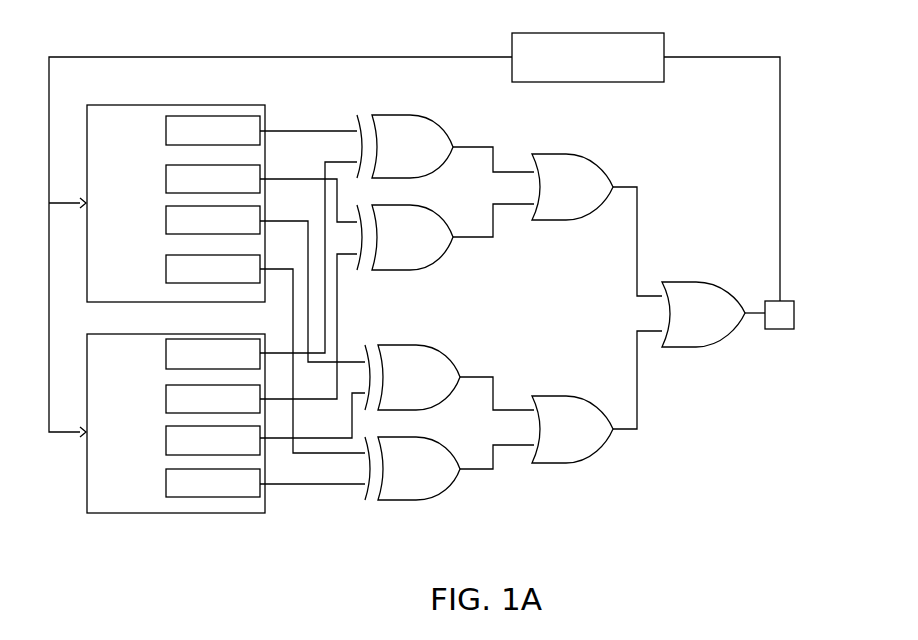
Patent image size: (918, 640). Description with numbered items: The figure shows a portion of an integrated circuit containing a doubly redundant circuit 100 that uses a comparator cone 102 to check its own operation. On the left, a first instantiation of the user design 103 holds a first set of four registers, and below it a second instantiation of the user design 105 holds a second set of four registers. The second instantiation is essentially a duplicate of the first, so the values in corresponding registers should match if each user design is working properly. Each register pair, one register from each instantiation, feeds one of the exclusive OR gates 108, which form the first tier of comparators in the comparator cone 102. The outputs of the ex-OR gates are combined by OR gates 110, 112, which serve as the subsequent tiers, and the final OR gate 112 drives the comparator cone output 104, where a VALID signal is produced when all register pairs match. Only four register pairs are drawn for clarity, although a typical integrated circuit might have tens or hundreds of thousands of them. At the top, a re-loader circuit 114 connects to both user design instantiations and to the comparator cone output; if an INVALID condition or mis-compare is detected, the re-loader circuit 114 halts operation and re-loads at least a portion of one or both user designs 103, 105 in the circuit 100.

The doubly redundant circuit 100 is at (716, 40).
The comparator cone 102 is at (560, 330).
The first instantiation of the user design 103 is at (140, 105).
The comparator cone output 104 is at (780, 329).
The second instantiation of the user design 105 is at (122, 513).
The exclusive OR gates 108 is at (415, 115).
The OR gate 110 is at (575, 220).
The OR gate 112 is at (712, 283).
The re-loader circuit 114 is at (586, 82).